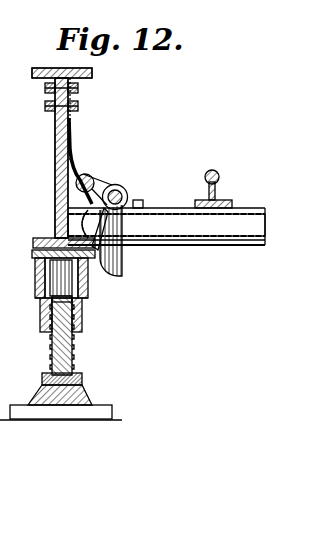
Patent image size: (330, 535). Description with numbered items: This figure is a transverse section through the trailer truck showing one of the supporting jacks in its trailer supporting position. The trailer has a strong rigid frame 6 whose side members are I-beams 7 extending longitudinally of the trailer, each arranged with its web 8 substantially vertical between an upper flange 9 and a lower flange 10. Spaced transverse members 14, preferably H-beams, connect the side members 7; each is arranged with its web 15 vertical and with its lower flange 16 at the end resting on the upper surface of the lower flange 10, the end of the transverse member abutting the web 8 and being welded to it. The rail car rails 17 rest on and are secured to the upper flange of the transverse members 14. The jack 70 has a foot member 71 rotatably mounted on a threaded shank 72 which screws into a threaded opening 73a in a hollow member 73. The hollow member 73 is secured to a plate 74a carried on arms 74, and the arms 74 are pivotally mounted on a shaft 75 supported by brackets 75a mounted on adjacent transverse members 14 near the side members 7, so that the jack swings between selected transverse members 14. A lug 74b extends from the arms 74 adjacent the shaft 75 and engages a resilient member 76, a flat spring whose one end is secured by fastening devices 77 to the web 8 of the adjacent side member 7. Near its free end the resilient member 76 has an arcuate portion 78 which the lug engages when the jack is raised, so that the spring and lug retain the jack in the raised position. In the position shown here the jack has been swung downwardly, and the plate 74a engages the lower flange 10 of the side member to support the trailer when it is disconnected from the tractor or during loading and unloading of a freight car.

The frame 6 is at (32, 78).
The I-beam side members 7 is at (55, 132).
The web 8 is at (55, 168).
The upper flange 9 is at (92, 77).
The lower flange 10 is at (33, 239).
The transverse members 14 is at (265, 209).
The web 15 is at (255, 225).
The lower flange 16 is at (262, 240).
The rail car rails 17 is at (222, 177).
The jack 70 is at (72, 330).
The foot member 71 is at (92, 402).
The threaded shank 72 is at (74, 362).
The hollow member 73 is at (88, 290).
The threaded opening 73a is at (73, 320).
The arms 74 is at (110, 262).
The plate 74a is at (32, 260).
The lug 74b is at (95, 182).
The shaft 75 is at (128, 192).
The brackets 75a is at (144, 204).
The resilient member 76 is at (72, 170).
The fastening devices 77 is at (78, 105).
The arcuate portion 78 is at (75, 222).